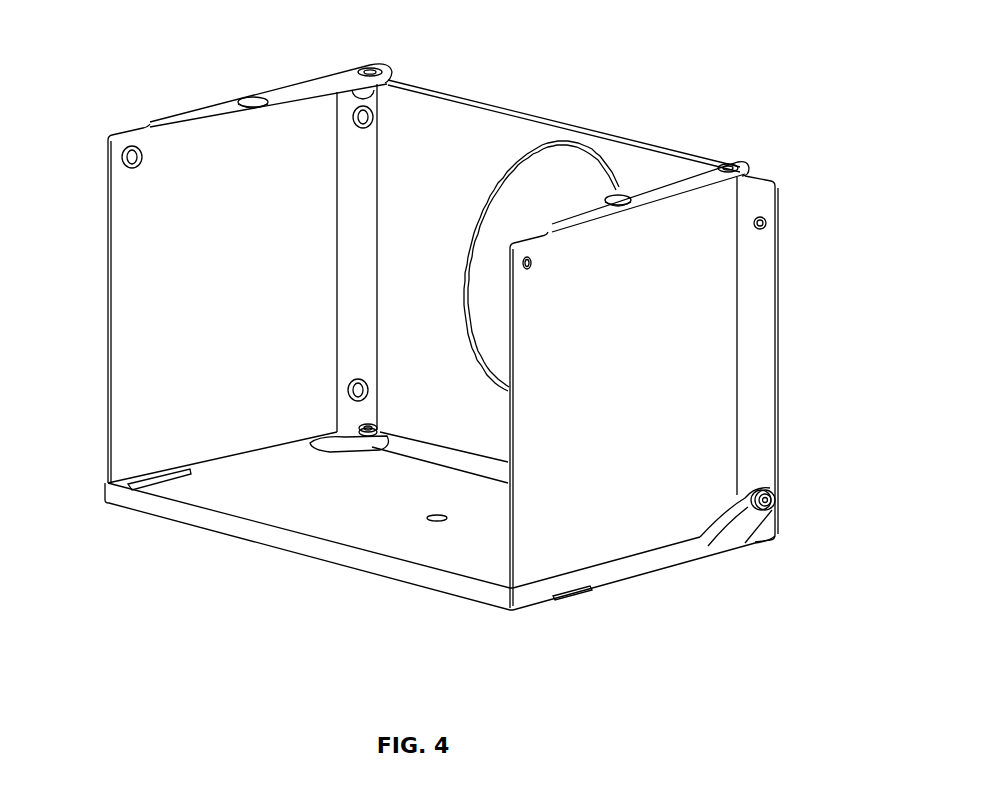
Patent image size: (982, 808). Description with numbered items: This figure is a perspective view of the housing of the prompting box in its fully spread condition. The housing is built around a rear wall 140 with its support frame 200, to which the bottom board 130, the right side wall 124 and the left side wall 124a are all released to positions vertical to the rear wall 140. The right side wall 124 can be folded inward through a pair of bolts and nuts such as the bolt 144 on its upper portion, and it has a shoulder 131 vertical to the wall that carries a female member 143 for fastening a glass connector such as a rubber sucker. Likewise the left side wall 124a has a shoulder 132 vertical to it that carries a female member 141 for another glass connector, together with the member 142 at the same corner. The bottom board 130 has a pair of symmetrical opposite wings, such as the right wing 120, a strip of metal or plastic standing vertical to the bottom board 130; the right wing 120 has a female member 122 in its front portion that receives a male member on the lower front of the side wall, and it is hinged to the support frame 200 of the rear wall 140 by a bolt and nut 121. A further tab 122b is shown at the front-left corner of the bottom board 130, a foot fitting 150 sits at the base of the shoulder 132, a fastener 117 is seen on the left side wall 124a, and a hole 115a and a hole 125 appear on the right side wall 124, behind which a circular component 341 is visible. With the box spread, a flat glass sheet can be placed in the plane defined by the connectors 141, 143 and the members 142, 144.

The left side wall 124a is at (138, 255).
The female member 141 is at (248, 100).
The member 142 is at (370, 68).
The shoulder 132 is at (315, 85).
The rear wall 140 is at (448, 118).
The circular housing 341 is at (569, 168).
The shoulder 131 is at (683, 184).
The female member 143 is at (627, 198).
The bolt 144 is at (733, 166).
The right side wall 124 is at (710, 320).
The panel hole 125 is at (766, 224).
The support frame 200 is at (758, 275).
The panel hole 115a is at (533, 268).
The fastener 117 is at (138, 160).
The bottom board 130 is at (253, 502).
The female member 122 is at (578, 593).
The lip tab 122b is at (170, 485).
The right wing 120 is at (700, 545).
The bolt and nut 121 is at (771, 500).
The foot bracket 150 is at (368, 426).